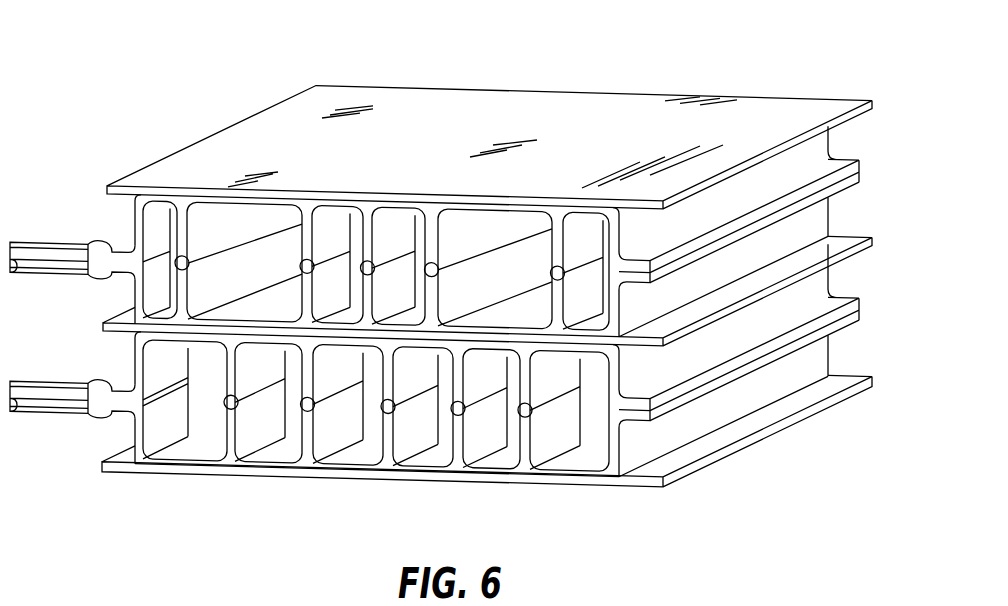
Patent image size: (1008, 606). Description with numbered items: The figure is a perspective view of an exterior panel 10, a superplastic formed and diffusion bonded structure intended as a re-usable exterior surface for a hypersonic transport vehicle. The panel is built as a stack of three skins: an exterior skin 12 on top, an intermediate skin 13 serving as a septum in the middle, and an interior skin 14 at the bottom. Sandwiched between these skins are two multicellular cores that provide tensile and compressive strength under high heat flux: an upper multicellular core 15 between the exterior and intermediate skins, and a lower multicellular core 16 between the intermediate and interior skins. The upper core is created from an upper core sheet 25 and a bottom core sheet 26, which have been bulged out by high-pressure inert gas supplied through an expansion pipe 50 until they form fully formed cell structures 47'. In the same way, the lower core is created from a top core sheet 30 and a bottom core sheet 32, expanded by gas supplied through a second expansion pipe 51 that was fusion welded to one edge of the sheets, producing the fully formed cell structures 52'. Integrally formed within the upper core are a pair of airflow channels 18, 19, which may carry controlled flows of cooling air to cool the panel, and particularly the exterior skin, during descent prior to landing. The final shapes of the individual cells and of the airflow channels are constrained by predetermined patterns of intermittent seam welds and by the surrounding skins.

The exterior panel 10 is at (205, 50).
The exterior skin 12 is at (767, 92).
The intermediate skin 13 is at (860, 215).
The interior skin 14 is at (803, 375).
The upper multicellular core 15 is at (419, 233).
The lower multicellular core 16 is at (419, 432).
The airflow channel 18 is at (258, 272).
The airflow channel 19 is at (508, 270).
The upper core sheet 25 is at (843, 130).
The bottom core sheet 26 is at (853, 160).
The top core sheet 30 is at (845, 267).
The bottom core sheet 32 is at (857, 295).
The cell structures 47' is at (345, 228).
The expansion pipe 50 is at (72, 240).
The expansion pipe 51 is at (60, 380).
The cell structures 52' is at (377, 505).